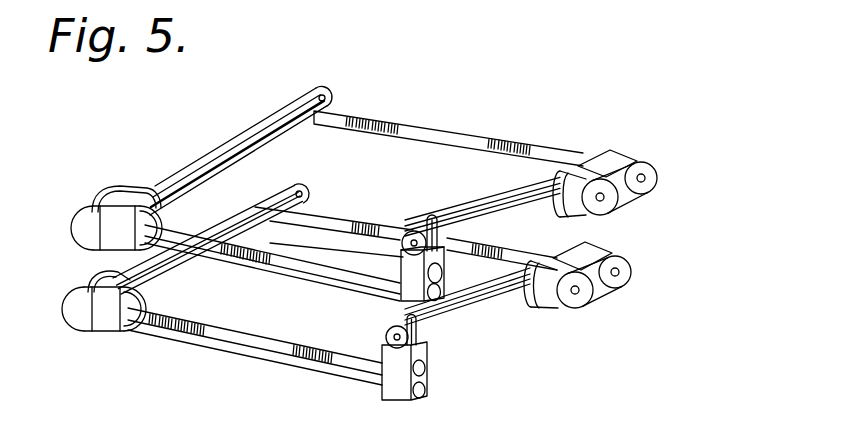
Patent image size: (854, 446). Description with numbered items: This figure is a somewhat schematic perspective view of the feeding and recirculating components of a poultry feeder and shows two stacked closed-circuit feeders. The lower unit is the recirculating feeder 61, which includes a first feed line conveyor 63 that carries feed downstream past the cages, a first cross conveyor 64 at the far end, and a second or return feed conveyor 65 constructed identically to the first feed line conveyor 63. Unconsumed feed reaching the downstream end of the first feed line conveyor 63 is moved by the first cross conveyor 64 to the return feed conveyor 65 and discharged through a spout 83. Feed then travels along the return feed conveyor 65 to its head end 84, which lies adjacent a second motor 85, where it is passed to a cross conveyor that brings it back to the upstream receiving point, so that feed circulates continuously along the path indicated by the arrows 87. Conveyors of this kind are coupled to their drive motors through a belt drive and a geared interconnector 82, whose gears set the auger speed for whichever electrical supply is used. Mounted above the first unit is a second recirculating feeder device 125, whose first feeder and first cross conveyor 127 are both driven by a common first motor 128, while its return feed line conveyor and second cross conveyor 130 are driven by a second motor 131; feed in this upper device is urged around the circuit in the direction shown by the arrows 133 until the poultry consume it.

The recirculating feeder 61 is at (200, 348).
The first feed line conveyor 63 is at (157, 336).
The first cross conveyor 64 is at (137, 268).
The return feed conveyor 65 is at (374, 222).
The geared interconnector 82 is at (100, 330).
The spout 83 is at (316, 200).
The head end 84 is at (556, 231).
The second motor 85 is at (618, 252).
The arrows 87 is at (215, 220).
The second recirculating feeder device 125 is at (103, 185).
The first cross conveyor 127 is at (247, 130).
The first motor 128 is at (374, 123).
The second cross conveyor 130 is at (547, 205).
The second motor 131 is at (611, 160).
The arrows 133 is at (185, 167).